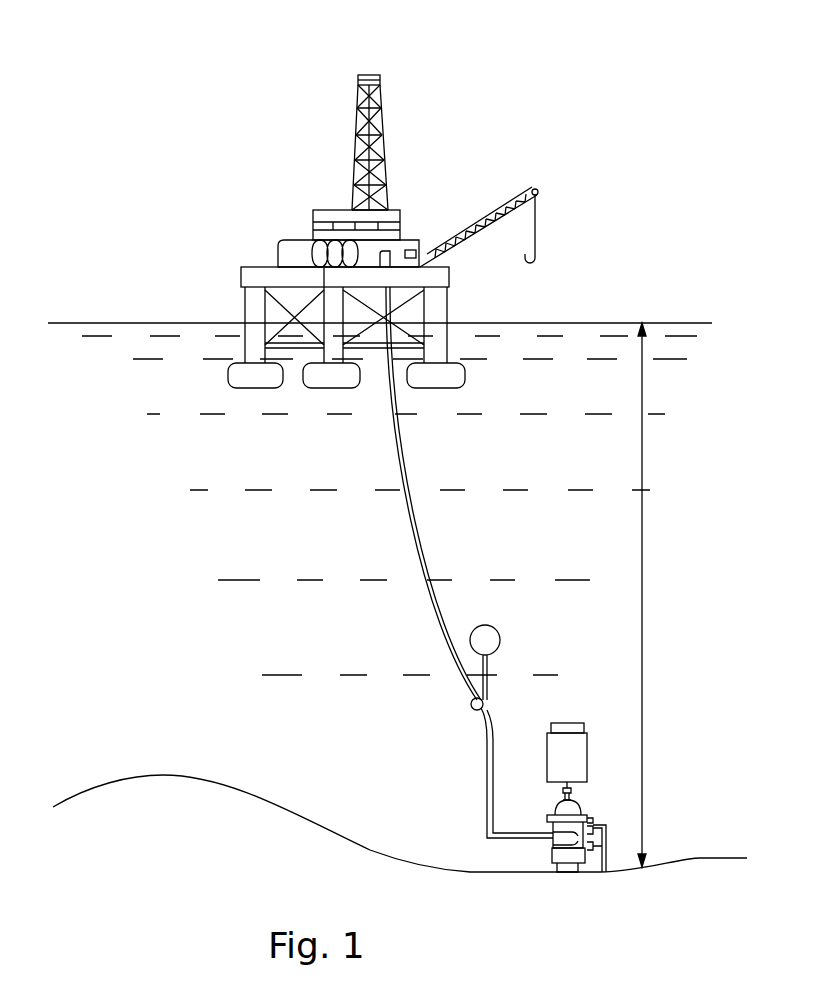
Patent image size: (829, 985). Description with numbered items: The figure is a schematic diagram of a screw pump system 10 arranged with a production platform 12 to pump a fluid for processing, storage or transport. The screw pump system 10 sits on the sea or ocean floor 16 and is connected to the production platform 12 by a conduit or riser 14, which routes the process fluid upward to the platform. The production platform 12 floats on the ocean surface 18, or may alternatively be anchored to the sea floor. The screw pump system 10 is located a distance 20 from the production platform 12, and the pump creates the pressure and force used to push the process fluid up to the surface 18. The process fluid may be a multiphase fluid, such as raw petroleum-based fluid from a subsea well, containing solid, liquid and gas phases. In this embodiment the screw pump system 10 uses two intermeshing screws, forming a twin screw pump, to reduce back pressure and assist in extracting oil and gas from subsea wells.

The screw pump system 10 is at (565, 690).
The production platform 12 is at (253, 85).
The conduit or riser 14 is at (417, 548).
The sea or ocean floor 16 is at (300, 817).
The ocean surface 18 is at (140, 322).
The distance 20 is at (642, 528).